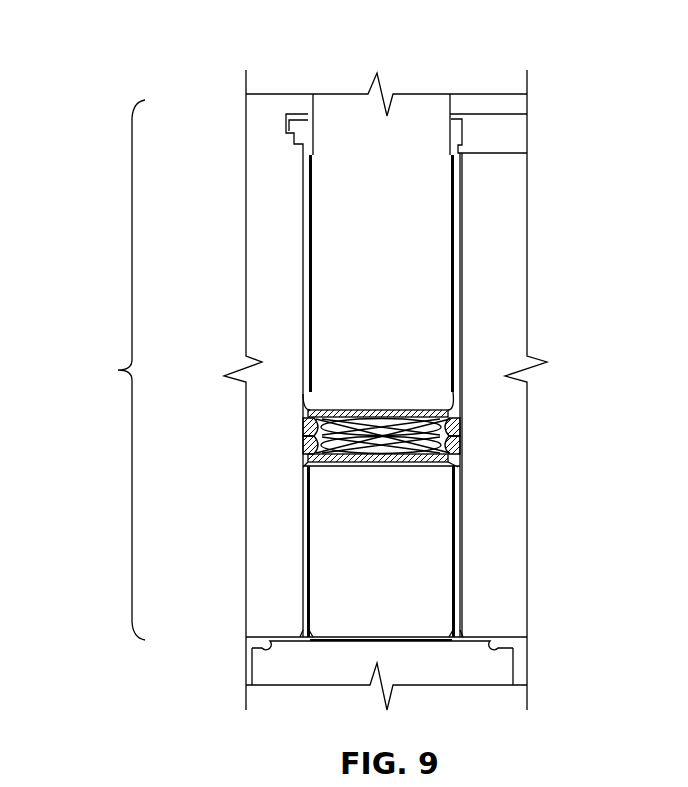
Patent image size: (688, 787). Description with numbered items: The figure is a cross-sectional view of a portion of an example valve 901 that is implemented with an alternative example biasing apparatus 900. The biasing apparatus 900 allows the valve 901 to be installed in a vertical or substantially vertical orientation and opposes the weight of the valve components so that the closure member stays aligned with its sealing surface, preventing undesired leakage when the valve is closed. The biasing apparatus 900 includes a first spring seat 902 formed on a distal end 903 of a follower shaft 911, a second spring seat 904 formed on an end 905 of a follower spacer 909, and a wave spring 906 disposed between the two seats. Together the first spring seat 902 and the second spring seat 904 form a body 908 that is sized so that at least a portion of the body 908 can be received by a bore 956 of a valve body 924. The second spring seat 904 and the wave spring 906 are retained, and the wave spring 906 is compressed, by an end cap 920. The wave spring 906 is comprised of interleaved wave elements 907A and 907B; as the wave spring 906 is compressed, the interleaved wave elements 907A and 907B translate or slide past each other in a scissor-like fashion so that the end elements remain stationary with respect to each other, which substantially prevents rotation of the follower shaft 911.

The valve 901 is at (123, 49).
The biasing apparatus 900 is at (235, 231).
The body 908 is at (106, 370).
The follower shaft 911 is at (343, 102).
The bore 956 is at (459, 232).
The valve body 924 is at (508, 297).
The distal end 903 is at (415, 410).
The first spring seat 902 is at (432, 393).
The wave spring 906 is at (466, 432).
The interleaved wave element 907A is at (314, 439).
The interleaved wave element 907B is at (314, 421).
The second spring seat 904 is at (330, 565).
The end 905 is at (403, 463).
The follower spacer 909 is at (350, 630).
The end cap 920 is at (470, 673).